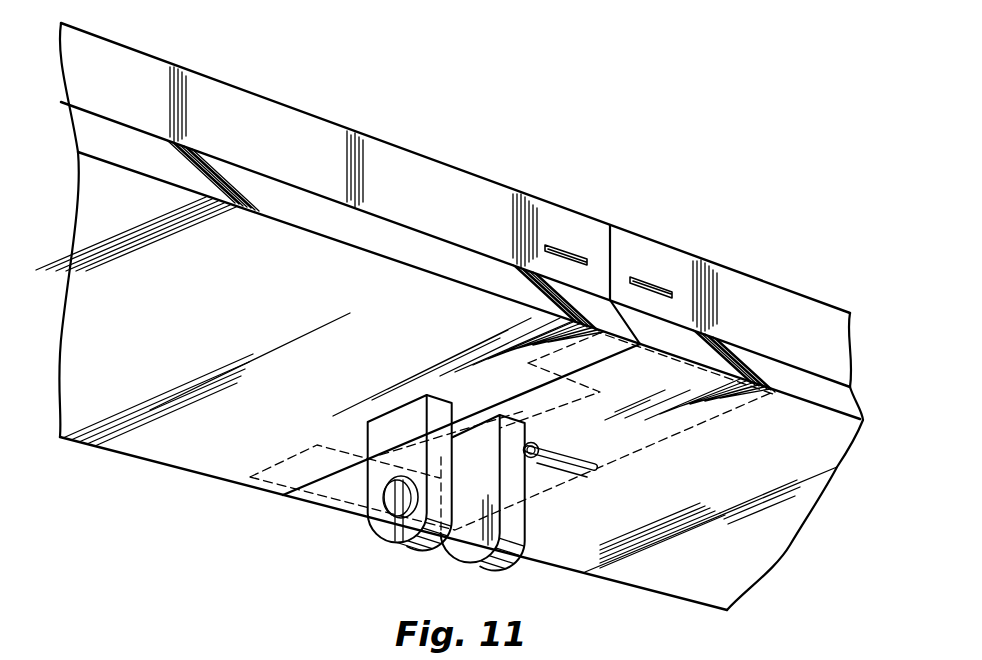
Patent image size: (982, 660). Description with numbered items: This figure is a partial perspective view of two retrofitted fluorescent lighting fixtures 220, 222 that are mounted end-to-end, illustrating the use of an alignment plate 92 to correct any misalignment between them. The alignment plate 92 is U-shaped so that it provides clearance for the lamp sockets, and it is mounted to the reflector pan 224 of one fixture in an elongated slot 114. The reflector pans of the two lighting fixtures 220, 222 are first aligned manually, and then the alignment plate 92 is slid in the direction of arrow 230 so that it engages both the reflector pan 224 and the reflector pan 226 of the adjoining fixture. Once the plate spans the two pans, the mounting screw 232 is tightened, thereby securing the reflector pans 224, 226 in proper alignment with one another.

The lighting fixture 220 is at (312, 114).
The lighting fixture 222 is at (747, 275).
The reflector pan 224 is at (710, 600).
The reflector pan 226 is at (140, 438).
The alignment plate 92 is at (680, 431).
The mounting screw 232 is at (523, 430).
The elongated slot 114 is at (600, 469).
The arrow 230 is at (540, 465).